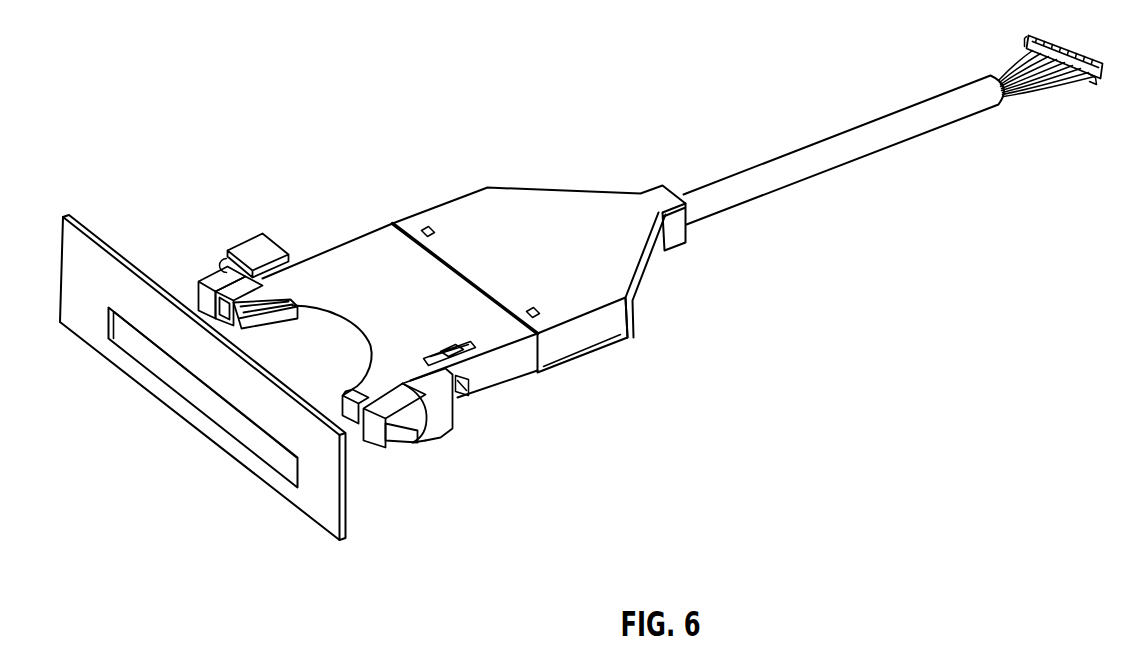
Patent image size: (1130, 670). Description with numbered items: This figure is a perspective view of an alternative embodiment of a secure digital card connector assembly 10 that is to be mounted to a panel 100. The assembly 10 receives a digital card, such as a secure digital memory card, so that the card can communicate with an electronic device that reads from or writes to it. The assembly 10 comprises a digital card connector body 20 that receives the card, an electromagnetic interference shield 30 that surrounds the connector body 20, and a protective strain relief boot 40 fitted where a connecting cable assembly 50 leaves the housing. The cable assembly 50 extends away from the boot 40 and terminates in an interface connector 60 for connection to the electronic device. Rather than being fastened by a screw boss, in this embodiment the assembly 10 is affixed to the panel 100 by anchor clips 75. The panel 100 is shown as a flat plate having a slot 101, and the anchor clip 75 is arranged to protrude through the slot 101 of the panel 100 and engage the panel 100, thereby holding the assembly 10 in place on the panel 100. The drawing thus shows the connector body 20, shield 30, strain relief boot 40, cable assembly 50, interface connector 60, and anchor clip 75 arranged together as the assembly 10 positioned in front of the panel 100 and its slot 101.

The secure digital card connector assembly 10 is at (563, 131).
The digital card connector body 20 is at (337, 346).
The electromagnetic interference (EMI) shield 30 is at (433, 326).
The strain relief boot 40 is at (493, 258).
The connecting cable assembly 50 is at (825, 155).
The interface connector 60 is at (1100, 86).
The anchor clip 75 is at (399, 442).
The panel 100 is at (320, 505).
The slot 101 is at (273, 450).